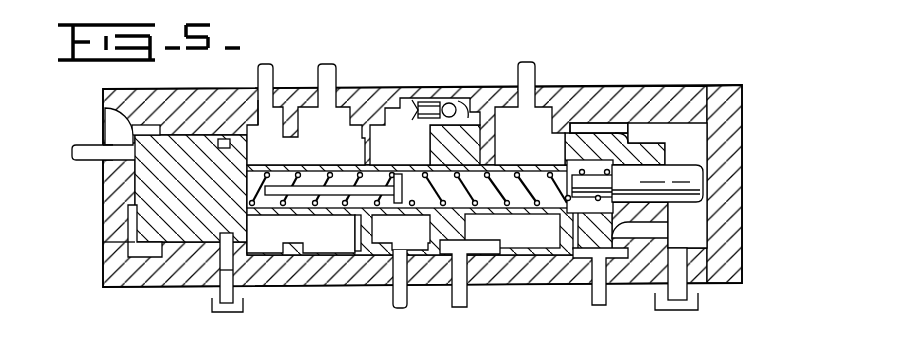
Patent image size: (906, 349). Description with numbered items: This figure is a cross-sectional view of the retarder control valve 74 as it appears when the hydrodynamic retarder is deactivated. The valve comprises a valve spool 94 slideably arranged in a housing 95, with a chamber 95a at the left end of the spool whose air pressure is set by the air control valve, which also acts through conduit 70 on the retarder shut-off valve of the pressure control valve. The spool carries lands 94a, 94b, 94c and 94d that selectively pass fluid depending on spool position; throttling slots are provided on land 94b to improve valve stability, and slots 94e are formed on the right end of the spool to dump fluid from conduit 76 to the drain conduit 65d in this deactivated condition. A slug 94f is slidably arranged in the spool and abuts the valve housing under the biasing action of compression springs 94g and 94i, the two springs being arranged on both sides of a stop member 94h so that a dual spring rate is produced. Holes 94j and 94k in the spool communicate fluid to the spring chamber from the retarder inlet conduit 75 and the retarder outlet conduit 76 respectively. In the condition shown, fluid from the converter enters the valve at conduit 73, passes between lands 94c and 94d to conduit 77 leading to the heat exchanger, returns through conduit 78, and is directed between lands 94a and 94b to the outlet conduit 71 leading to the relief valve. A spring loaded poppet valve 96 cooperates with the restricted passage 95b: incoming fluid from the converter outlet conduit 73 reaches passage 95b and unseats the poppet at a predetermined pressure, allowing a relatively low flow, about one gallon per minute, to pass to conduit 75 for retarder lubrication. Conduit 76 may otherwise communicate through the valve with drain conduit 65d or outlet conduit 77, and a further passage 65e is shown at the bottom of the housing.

The retarder control valve 74 is at (619, 74).
The valve spool 94 is at (140, 239).
The land 94a is at (262, 100).
The land 94b is at (348, 142).
The land 94c is at (425, 133).
The land 94d is at (567, 150).
The slots 94e is at (628, 132).
The slug 94f is at (693, 176).
The compression spring 94g is at (503, 222).
The stop member 94h is at (357, 222).
The compression spring 94i is at (401, 232).
The hole 94j is at (361, 247).
The hole 94k is at (575, 252).
The housing 95 is at (128, 282).
The chamber 95a is at (128, 118).
The restricted passage 95b is at (462, 102).
The spring loaded poppet valve 96 is at (423, 76).
The conduit 70 is at (86, 163).
The conduit 71 is at (262, 110).
The conduit 73 is at (470, 292).
The conduit 75 is at (404, 292).
The conduit 76 is at (608, 293).
The conduit 77 is at (526, 24).
The conduit 78 is at (327, 20).
The drain conduit 65d is at (698, 288).
The conduit 65e is at (226, 292).